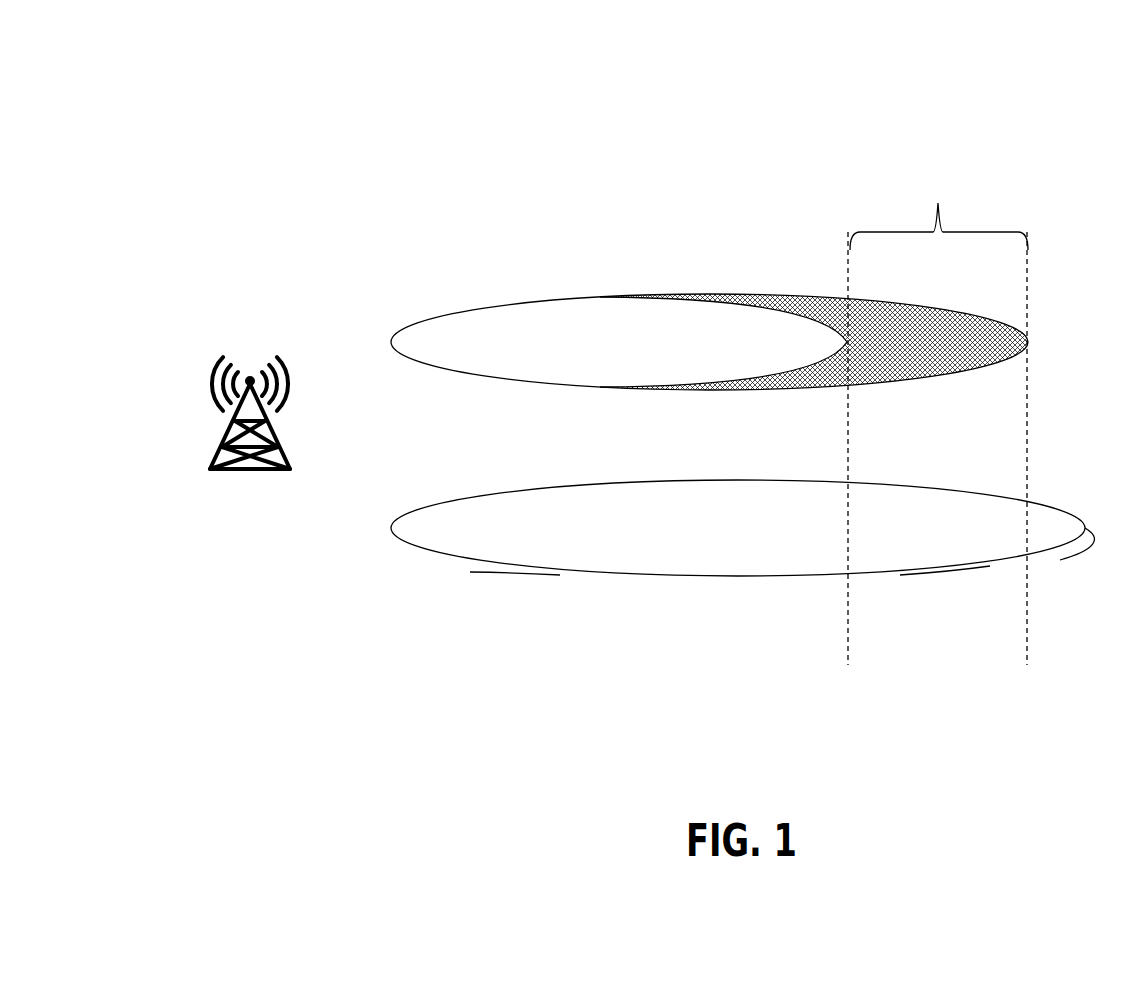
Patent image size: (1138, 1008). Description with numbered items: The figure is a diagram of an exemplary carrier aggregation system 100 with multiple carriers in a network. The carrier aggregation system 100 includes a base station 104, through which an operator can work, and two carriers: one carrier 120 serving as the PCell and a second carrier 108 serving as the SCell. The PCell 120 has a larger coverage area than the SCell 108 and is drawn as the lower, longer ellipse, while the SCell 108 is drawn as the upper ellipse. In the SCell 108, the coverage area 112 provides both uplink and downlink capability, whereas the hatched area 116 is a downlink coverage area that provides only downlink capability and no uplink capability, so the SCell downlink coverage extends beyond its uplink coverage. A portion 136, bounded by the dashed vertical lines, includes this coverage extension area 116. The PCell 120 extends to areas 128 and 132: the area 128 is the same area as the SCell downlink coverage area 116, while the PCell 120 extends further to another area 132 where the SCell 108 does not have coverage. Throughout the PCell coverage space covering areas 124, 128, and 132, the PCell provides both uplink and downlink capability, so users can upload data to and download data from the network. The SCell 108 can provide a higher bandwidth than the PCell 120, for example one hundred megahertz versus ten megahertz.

The carrier aggregation system 100 is at (936, 112).
The base station 104 is at (240, 340).
The SCell carrier 108 is at (723, 262).
The SCell uplink and downlink coverage area 112 is at (574, 294).
The SCell downlink coverage area 116 is at (912, 300).
The PCell carrier 120 is at (673, 455).
The PCell coverage area 124 is at (510, 567).
The PCell area overlapping SCell downlink coverage 128 is at (947, 565).
The PCell-only coverage area 132 is at (1080, 540).
The portion including coverage extension area 136 is at (1032, 423).